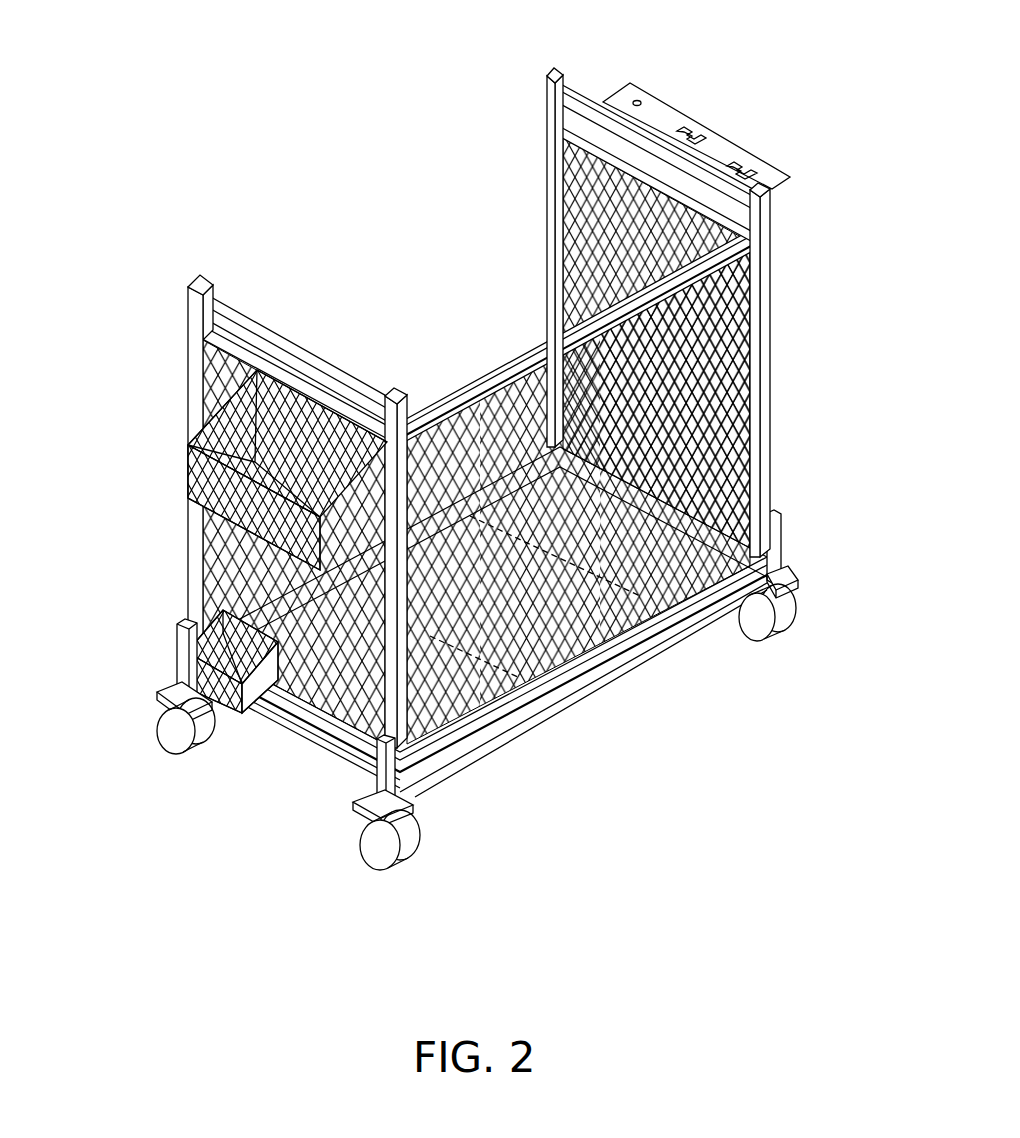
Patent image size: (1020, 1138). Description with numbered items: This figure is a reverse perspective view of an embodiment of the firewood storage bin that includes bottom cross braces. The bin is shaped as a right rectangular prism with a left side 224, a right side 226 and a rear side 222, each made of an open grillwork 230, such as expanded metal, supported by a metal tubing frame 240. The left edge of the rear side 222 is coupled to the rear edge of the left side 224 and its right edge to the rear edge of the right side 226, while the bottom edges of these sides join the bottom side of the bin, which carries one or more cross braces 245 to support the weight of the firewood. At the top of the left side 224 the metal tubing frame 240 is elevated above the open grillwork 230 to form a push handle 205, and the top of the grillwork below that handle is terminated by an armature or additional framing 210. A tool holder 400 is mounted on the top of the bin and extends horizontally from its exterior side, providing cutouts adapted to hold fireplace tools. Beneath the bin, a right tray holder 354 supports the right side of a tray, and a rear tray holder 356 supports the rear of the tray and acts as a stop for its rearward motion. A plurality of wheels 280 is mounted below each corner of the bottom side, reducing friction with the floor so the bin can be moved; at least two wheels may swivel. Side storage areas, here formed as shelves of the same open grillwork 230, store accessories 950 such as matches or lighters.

The push handle 205 is at (583, 98).
The additional framing 210 is at (625, 160).
The tool holder 400 is at (720, 147).
The left side 224 is at (595, 208).
The rear side 222 is at (722, 425).
The right side 226 is at (335, 685).
The metal tubing frame 240 is at (765, 318).
The open grillwork 230 is at (680, 628).
The cross braces 245 is at (563, 570).
The right tray holder 354 is at (280, 725).
The rear tray holder 356 is at (490, 757).
The plurality of wheels 280 is at (795, 611).
The accessories 950 is at (193, 660).